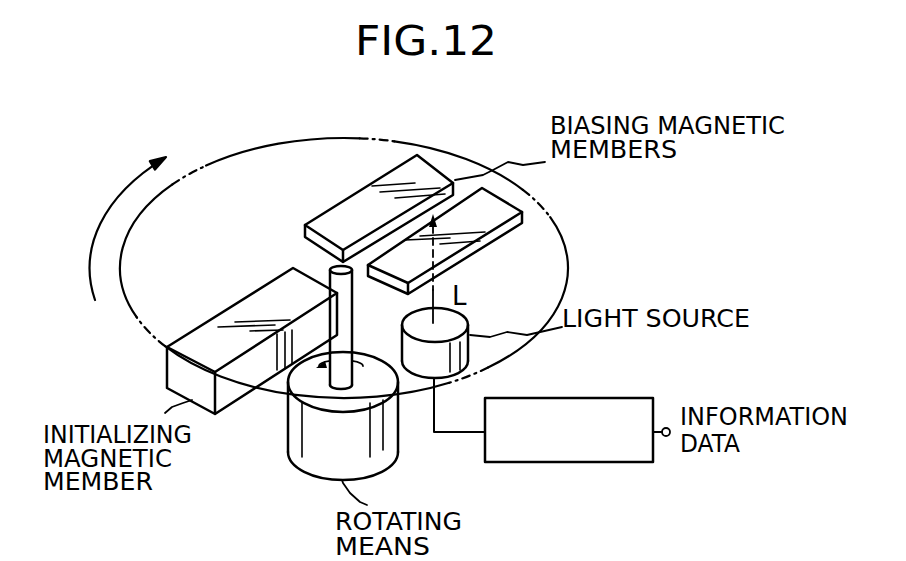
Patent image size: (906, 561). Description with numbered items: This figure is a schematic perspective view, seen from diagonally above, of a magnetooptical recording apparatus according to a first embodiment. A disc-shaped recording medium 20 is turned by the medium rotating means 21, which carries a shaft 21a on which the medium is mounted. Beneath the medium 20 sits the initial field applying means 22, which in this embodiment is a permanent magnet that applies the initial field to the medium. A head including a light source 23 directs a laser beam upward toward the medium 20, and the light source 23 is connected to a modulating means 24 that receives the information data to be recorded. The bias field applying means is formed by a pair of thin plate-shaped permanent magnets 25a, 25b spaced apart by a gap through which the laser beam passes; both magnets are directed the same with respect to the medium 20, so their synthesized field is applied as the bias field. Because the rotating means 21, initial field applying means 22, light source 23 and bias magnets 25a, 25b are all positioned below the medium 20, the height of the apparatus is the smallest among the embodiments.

The recording medium 20 is at (406, 140).
The medium rotating means 21 is at (355, 472).
The rotating shaft 21a is at (350, 283).
The initial field applying means 22 is at (203, 407).
The light source 23 is at (470, 358).
The modulating means 24 is at (580, 463).
The thin plate-shaped permanent magnet 25a is at (523, 218).
The thin plate-shaped permanent magnet 25b is at (452, 179).